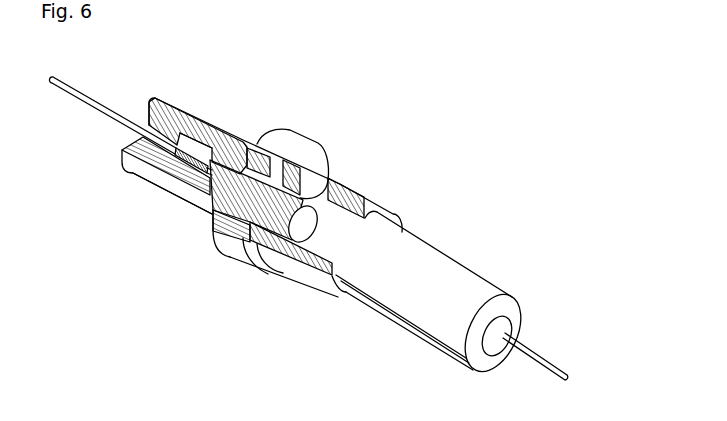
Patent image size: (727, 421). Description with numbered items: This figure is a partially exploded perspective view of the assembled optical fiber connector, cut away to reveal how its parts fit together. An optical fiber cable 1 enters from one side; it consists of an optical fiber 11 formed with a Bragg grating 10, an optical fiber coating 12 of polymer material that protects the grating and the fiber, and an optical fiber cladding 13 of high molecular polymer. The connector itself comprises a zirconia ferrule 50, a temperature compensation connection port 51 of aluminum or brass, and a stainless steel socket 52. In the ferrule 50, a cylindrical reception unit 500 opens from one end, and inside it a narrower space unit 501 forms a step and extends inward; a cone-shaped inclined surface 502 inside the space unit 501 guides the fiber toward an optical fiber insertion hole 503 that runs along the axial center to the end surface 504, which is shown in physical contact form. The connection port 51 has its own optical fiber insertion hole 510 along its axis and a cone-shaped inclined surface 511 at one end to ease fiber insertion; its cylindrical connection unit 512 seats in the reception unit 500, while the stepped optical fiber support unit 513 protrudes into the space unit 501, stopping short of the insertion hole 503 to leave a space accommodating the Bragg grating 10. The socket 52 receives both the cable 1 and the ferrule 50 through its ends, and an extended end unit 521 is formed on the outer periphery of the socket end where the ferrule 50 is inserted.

The optical fiber cable 1 is at (468, 259).
The Bragg grating 10 is at (168, 172).
The optical fiber 11 is at (70, 82).
The optical fiber coating 12 is at (513, 328).
The optical fiber cladding 13 is at (428, 242).
The ferrule 50 is at (181, 96).
The reception unit 500 is at (255, 142).
The space unit 501 is at (190, 140).
The cone-shaped inclined surface 502 is at (160, 165).
The optical fiber insertion hole 503 is at (148, 110).
The end surface 504 is at (130, 140).
The temperature compensation connection port 51 is at (293, 157).
The optical fiber insertion hole 510 is at (258, 248).
The cone-shaped inclined surface 511 is at (300, 257).
The connection unit 512 is at (270, 148).
The optical fiber support unit 513 is at (195, 195).
The socket 52 is at (356, 181).
The extended end unit 521 is at (228, 256).